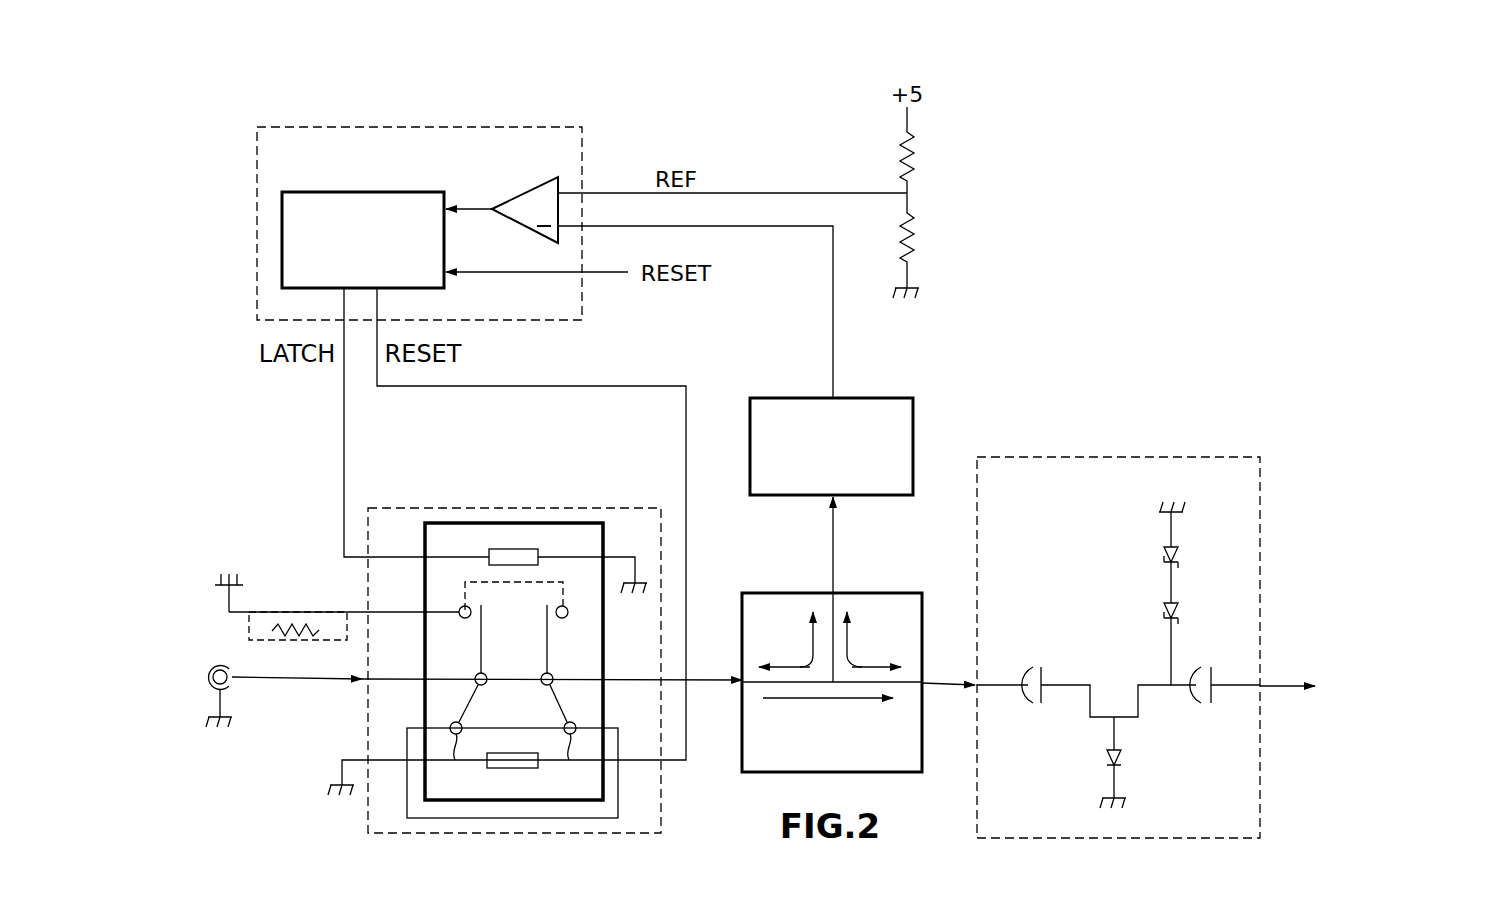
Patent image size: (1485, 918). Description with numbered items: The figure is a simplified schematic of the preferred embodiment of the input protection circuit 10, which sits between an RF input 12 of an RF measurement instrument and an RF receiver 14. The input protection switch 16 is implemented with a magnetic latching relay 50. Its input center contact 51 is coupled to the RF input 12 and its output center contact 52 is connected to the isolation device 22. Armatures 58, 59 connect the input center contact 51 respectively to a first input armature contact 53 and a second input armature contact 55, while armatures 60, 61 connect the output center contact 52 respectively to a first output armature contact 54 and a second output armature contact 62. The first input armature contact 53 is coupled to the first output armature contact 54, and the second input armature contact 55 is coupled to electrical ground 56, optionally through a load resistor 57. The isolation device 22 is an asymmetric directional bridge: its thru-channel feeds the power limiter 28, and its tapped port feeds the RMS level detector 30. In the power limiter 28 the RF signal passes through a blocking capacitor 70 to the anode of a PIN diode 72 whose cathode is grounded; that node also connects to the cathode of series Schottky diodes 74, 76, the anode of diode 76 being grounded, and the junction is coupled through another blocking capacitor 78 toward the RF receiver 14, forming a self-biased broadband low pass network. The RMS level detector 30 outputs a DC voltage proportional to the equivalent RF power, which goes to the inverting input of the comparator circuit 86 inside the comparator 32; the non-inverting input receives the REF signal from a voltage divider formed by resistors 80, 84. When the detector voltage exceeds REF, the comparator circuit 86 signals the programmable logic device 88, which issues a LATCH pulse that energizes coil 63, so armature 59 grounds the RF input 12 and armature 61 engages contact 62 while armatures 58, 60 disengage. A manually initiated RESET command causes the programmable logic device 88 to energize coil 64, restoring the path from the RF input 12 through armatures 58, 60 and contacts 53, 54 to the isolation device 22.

The input protection circuit 10 is at (1052, 201).
The RF input 12 is at (203, 677).
The RF receiver 14 is at (1350, 688).
The input protection switch 16 is at (635, 508).
The isolation device 22 is at (881, 593).
The power limiter 28 is at (1207, 457).
The RMS level detector 30 is at (881, 398).
The comparator 32 is at (315, 127).
The magnetic latching relay 50 is at (576, 523).
The input center contact 51 is at (487, 677).
The output center contact 52 is at (542, 685).
The first input armature contact 53 is at (453, 759).
The first output armature contact 54 is at (570, 759).
The second input armature contact 55 is at (458, 607).
The electrical ground 56 is at (215, 583).
The load resistor 57 is at (302, 630).
The armature 58 is at (466, 694).
The armature 59 is at (482, 622).
The armature 60 is at (558, 700).
The armature 61 is at (550, 657).
The second output armature contact 62 is at (568, 614).
The coil 63 is at (513, 549).
The coil 64 is at (512, 750).
The blocking capacitor 70 is at (1033, 666).
The PIN diode 72 is at (1106, 758).
The Schottky diode 74 is at (1179, 611).
The Schottky diode 76 is at (1179, 553).
The blocking capacitor 78 is at (1205, 706).
The resistor 80 is at (916, 234).
The resistor 84 is at (916, 155).
The comparator circuit 86 is at (526, 192).
The programmable logic device 88 is at (412, 192).